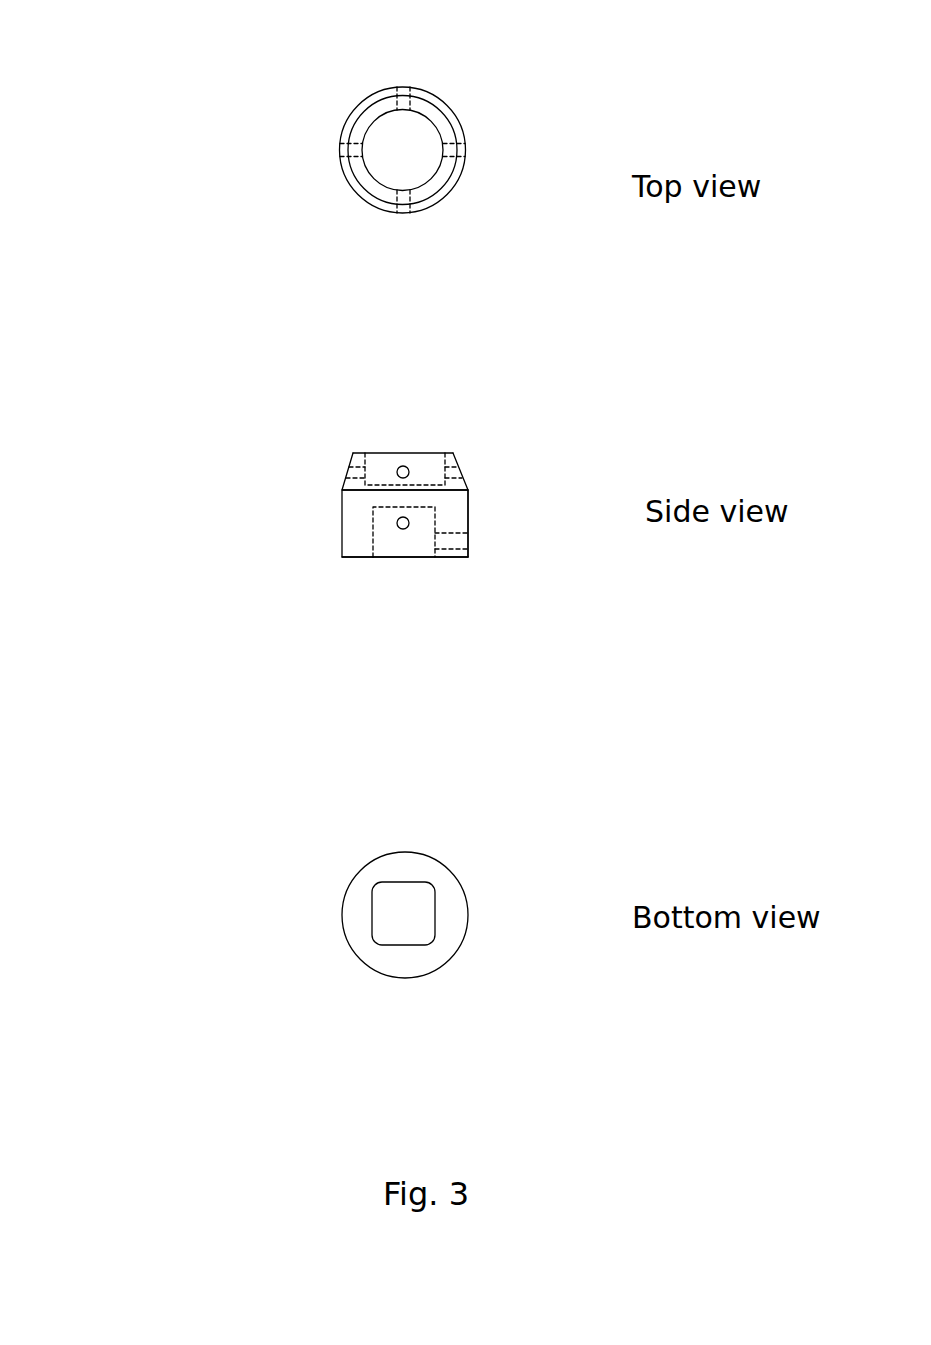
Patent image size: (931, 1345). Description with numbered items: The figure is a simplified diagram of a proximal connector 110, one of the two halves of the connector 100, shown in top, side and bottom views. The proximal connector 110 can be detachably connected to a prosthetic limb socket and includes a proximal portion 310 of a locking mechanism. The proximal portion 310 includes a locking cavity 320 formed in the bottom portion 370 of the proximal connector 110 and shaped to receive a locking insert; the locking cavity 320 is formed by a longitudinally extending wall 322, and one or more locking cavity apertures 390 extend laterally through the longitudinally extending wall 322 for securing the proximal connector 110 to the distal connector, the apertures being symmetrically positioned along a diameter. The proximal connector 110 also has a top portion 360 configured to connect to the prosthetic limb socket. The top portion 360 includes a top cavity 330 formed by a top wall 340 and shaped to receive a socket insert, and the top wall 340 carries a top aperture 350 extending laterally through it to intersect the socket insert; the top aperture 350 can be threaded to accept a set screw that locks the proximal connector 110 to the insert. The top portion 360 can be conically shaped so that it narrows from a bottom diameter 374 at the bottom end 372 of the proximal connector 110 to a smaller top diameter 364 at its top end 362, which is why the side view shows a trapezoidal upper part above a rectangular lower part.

The proximal connector 110 is at (342, 913).
The connector 100 is at (373, 120).
The top diameter 364 is at (318, 240).
The top wall 340 is at (433, 455).
The top aperture 350 is at (458, 472).
The top portion 360 is at (343, 486).
The top end 362 is at (353, 455).
The bottom portion 370 is at (342, 533).
The bottom end 372 is at (353, 558).
The top cavity 330 is at (467, 497).
The locking cavity 320 is at (440, 533).
The longitudinally extending wall 322 is at (443, 550).
The locking cavity aperture 390 is at (402, 532).
The proximal portion of locking mechanism 310 is at (410, 558).
The bottom diameter 374 is at (302, 1015).